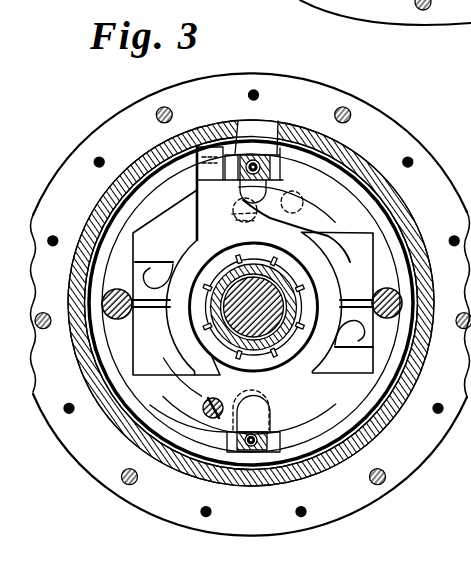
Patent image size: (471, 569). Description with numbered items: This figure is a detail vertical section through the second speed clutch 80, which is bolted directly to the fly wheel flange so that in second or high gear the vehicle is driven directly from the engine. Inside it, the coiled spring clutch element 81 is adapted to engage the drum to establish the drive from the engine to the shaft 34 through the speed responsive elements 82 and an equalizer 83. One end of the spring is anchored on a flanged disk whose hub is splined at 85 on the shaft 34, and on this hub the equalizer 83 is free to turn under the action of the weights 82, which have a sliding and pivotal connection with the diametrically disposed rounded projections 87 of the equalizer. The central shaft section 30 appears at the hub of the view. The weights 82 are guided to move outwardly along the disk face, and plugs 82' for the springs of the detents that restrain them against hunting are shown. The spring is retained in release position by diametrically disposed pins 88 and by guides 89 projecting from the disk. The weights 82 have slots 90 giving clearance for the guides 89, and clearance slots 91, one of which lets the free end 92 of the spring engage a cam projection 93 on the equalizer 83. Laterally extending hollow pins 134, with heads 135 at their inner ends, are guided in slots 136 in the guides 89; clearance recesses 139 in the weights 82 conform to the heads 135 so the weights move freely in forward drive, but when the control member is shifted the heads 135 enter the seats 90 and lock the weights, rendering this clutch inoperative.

The shaft 30 is at (268, 325).
The shaft 34 is at (296, 318).
The clutch 80 is at (357, 153).
The coiled spring clutch element 81 is at (399, 236).
The speed responsive elements 82 is at (274, 294).
The plugs 82' is at (235, 314).
The equalizer 83 is at (208, 400).
The splined hub connection 85 is at (218, 333).
The rounded projections 87 is at (140, 274).
The pins 88 is at (165, 262).
The guides 89 is at (252, 158).
The slots 90 is at (212, 190).
The clearance slots 91 is at (330, 218).
The free end of the spring 92 is at (258, 216).
The cam projection 93 is at (243, 207).
The hollow pins 134 is at (240, 148).
The heads 135 is at (278, 185).
The slots 136 is at (274, 158).
The clearance recesses 139 is at (197, 219).